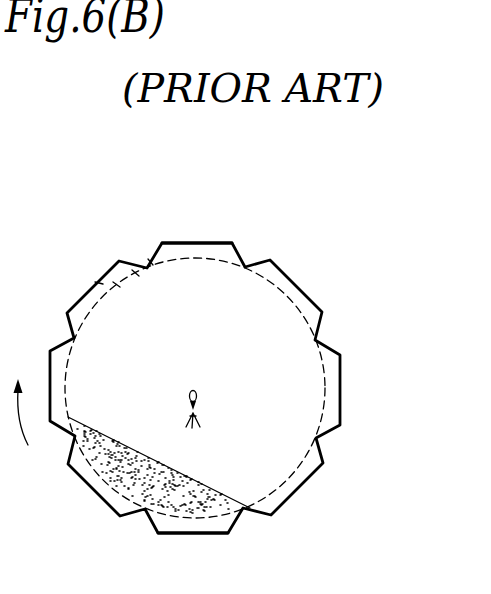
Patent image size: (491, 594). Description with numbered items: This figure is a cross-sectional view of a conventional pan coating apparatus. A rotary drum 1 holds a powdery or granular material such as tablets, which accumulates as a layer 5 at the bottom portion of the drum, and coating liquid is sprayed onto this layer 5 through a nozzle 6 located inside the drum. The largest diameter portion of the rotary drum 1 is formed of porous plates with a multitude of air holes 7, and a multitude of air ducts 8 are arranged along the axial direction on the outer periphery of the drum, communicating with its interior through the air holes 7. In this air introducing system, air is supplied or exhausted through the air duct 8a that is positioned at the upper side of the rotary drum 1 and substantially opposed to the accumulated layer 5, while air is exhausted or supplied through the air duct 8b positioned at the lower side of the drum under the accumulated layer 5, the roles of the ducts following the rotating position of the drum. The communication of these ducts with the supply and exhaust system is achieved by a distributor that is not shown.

The rotary drum 1 is at (292, 303).
The layer of powdery or granular material 5 is at (188, 474).
The nozzle 6 is at (200, 396).
The air holes 7 is at (150, 262).
The air ducts 8 is at (77, 300).
The upper air duct 8a is at (207, 242).
The lower air duct 8b is at (203, 534).